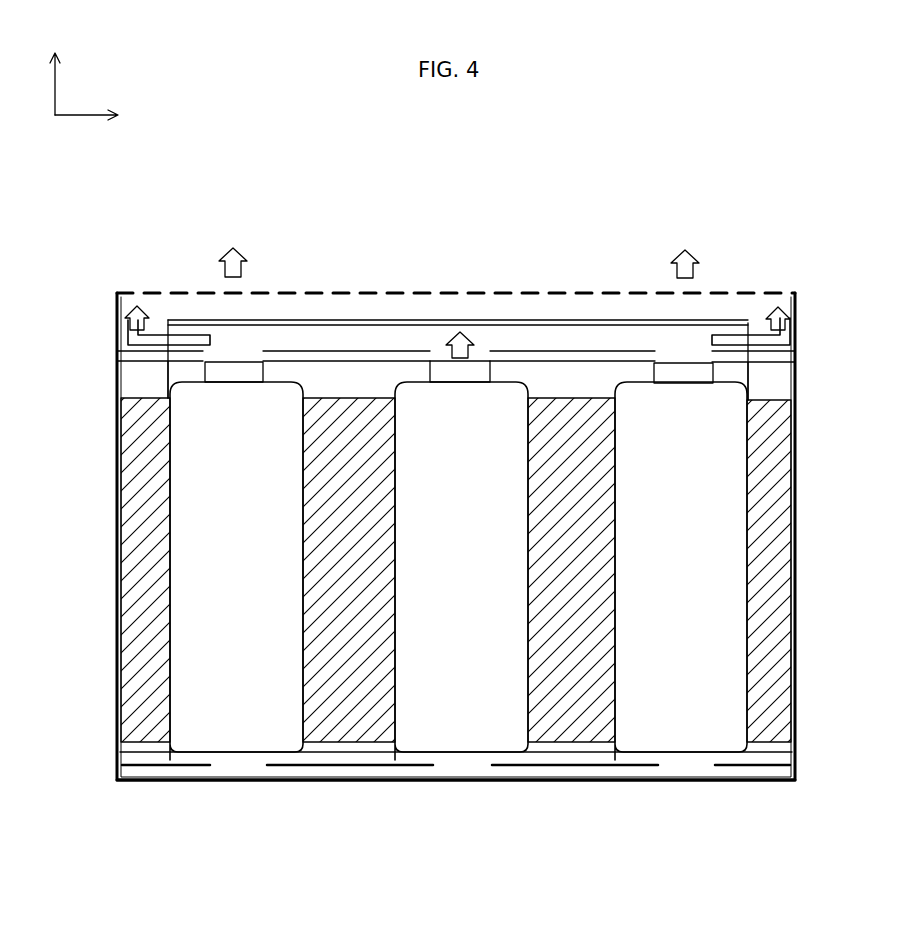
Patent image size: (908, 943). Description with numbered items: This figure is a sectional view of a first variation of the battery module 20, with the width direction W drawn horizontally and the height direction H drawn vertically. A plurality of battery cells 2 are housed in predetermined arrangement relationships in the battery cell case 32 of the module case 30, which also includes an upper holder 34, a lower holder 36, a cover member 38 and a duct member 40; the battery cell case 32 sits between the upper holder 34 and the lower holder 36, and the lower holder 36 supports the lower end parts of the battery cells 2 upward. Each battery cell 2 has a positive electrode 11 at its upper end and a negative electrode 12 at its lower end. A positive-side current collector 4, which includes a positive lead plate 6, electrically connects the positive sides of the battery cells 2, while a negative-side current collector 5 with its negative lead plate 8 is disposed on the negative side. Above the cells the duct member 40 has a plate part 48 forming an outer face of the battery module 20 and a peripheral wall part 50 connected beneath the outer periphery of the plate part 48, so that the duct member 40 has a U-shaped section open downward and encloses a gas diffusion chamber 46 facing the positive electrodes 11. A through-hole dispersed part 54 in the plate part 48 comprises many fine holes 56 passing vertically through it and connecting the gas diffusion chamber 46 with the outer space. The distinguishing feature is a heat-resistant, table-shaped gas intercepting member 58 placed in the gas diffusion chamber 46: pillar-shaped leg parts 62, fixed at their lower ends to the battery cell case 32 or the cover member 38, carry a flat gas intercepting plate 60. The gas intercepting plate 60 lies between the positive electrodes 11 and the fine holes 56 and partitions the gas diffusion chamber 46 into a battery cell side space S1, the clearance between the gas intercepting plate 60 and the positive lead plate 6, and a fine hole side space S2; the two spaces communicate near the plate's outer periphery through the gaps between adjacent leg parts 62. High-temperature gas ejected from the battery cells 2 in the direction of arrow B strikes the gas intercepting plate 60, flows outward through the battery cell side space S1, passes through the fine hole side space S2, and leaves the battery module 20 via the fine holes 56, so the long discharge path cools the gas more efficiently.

The battery module 20 is at (758, 190).
The module case 30 is at (795, 445).
The battery cell case 32 is at (778, 545).
The upper holder 34 is at (776, 362).
The lower holder 36 is at (775, 770).
The cover member 38 is at (700, 780).
The duct member 40 is at (890, 216).
The plate part 48 is at (770, 293).
The peripheral wall part 50 is at (805, 313).
The gas diffusion chamber 46 is at (582, 207).
The battery cell side space S1 is at (601, 333).
The fine hole side space S2 is at (630, 310).
The through-hole dispersed part 54 is at (276, 207).
The fine holes 56 is at (305, 292).
The gas intercepting member 58 is at (393, 320).
The gas intercepting plate 60 is at (422, 322).
The leg parts 62 is at (150, 318).
The positive electrode 11 is at (210, 360).
The positive-side current collector 4 is at (563, 350).
The positive lead plate 6 is at (112, 336).
The battery cells 2 is at (190, 547).
The negative electrode 12 is at (233, 752).
The negative lead plate 8 is at (355, 768).
The negative-side current collector 5 is at (565, 765).
The gas ejection direction arrow B is at (483, 353).
The height direction H is at (58, 82).
The width direction W is at (83, 120).